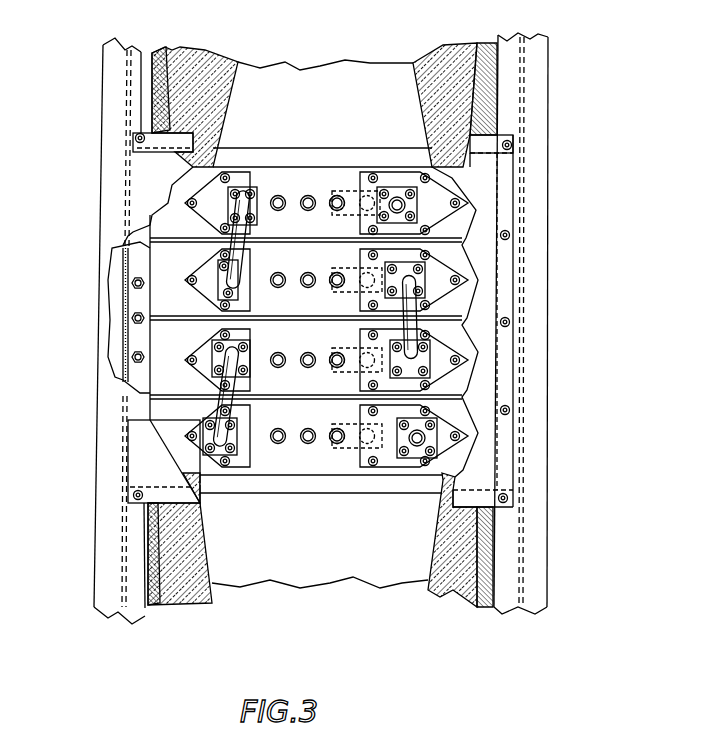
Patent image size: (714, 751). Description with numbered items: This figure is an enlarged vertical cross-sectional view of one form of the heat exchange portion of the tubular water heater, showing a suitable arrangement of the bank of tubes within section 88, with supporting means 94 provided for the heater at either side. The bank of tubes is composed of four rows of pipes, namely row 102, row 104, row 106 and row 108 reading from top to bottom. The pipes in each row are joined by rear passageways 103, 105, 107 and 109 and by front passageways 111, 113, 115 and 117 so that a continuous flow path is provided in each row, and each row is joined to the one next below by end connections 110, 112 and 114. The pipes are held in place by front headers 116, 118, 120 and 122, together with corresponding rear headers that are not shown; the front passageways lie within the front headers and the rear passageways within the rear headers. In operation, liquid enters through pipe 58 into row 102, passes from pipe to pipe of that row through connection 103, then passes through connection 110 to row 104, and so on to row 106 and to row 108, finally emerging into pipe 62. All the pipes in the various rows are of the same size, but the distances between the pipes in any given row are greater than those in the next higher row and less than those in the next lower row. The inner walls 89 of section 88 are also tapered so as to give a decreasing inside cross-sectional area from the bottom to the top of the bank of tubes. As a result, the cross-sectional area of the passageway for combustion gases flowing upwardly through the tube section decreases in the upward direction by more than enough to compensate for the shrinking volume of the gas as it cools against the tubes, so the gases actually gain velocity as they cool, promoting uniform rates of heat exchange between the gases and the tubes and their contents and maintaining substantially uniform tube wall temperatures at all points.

The pipe 58 is at (400, 204).
The pipe 62 is at (407, 458).
The section 88 is at (330, 103).
The inner walls 89 is at (228, 108).
The supporting means 94 is at (97, 497).
The row of pipes 102 is at (307, 196).
The rear passageway 103 is at (305, 217).
The row of pipes 104 is at (307, 273).
The rear passageway 105 is at (306, 293).
The row of pipes 106 is at (307, 352).
The rear passageway 107 is at (307, 374).
The row of pipes 108 is at (307, 428).
The rear passageway 109 is at (307, 450).
The end connection 110 is at (243, 212).
The front passageway 111 is at (355, 170).
The end connection 112 is at (412, 323).
The front passageway 113 is at (357, 290).
The end connection 114 is at (223, 408).
The front passageway 115 is at (340, 372).
The front header 116 is at (358, 180).
The front passageway 117 is at (350, 424).
The front header 118 is at (200, 292).
The front header 120 is at (200, 376).
The front header 122 is at (355, 462).